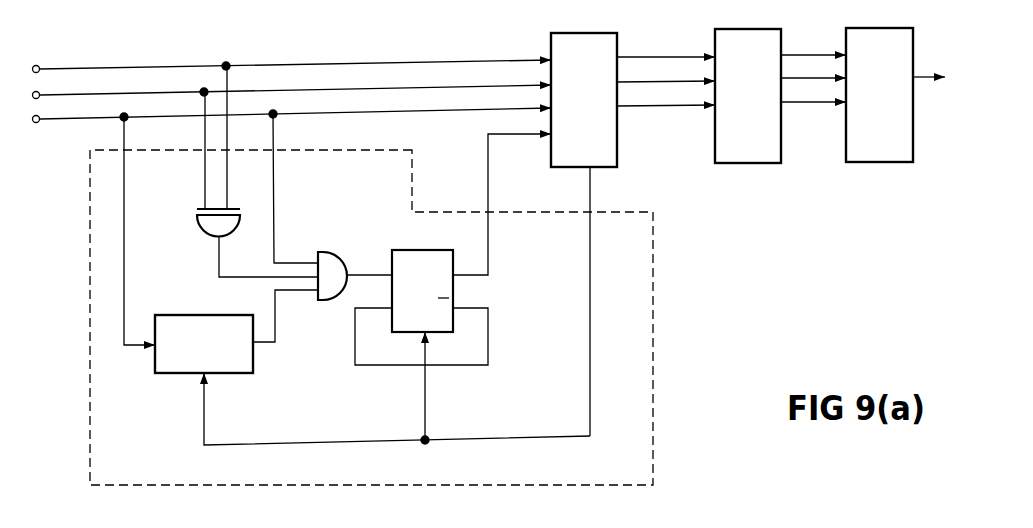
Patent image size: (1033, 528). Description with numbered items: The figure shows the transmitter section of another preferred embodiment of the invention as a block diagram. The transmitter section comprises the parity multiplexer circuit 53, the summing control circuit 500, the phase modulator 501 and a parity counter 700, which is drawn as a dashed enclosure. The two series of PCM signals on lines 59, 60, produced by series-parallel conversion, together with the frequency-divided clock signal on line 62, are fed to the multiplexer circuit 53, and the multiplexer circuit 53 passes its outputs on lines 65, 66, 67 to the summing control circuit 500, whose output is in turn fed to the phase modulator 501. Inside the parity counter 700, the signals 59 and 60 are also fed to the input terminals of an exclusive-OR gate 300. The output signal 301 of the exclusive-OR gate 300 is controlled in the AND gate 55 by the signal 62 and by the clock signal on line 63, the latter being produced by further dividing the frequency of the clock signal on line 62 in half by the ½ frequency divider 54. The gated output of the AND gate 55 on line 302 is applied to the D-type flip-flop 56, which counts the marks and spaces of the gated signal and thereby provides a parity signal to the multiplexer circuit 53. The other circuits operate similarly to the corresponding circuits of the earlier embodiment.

The PCM signal line 59 is at (112, 66).
The PCM signal line 60 is at (112, 95).
The frequency-divided clock signal line 62 is at (112, 118).
The parity multiplexer circuit 53 is at (585, 33).
The multiplexer output line 65 is at (645, 56).
The multiplexer output line 66 is at (645, 82).
The multiplexer output line 67 is at (645, 106).
The summing control circuit 500 is at (740, 29).
The phase modulator 501 is at (878, 28).
The parity counter 700 is at (654, 275).
The exclusive-OR gate 300 is at (194, 231).
The exclusive-OR gate output signal 301 is at (219, 262).
The AND gate 55 is at (329, 252).
The AND gate output line 302 is at (355, 270).
The D-type flip-flop 56 is at (430, 250).
The ½ frequency divider 54 is at (180, 314).
The clock signal line 63 is at (279, 326).